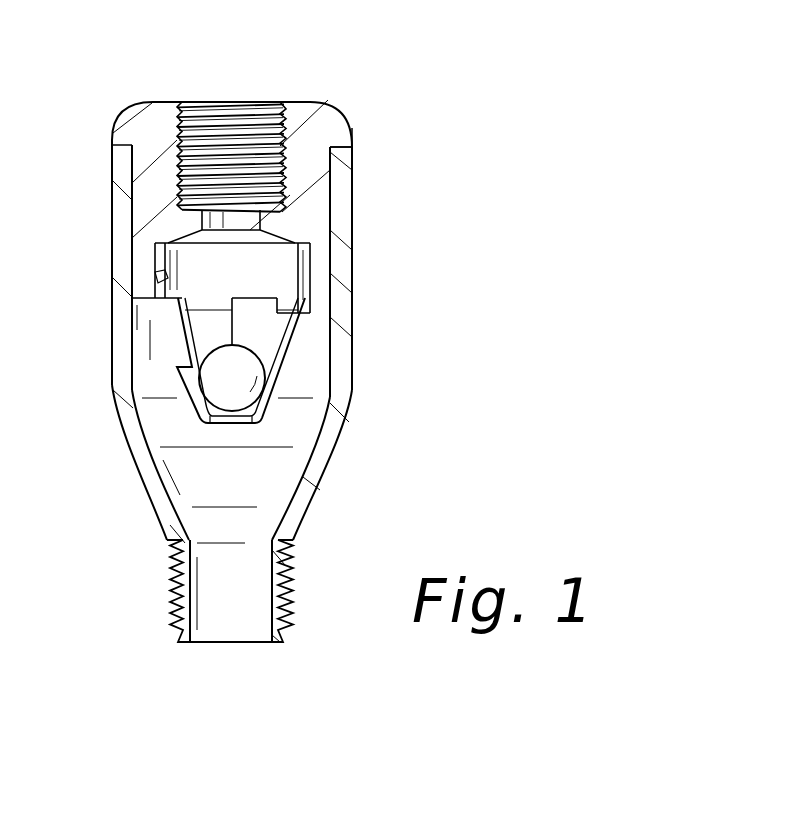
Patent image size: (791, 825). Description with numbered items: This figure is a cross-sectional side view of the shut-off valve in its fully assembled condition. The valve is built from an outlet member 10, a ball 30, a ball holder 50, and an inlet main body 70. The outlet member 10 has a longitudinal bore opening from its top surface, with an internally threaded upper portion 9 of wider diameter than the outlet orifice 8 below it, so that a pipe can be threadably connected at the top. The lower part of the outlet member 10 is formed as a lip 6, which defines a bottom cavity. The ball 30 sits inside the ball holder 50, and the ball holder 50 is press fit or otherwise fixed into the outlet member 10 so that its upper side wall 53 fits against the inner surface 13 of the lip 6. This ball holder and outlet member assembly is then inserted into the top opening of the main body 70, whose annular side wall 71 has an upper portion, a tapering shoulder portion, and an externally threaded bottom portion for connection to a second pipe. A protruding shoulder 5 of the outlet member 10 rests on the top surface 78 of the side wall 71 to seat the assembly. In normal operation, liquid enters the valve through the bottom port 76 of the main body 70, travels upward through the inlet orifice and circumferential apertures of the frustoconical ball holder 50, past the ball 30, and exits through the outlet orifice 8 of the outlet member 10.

The protruding shoulder 5 is at (113, 140).
The lip 6 is at (143, 262).
The internally threaded upper portion 9 is at (275, 103).
The outlet member 10 is at (337, 118).
The top surface 78 is at (350, 128).
The annular side wall 71 is at (345, 182).
The outlet orifice 8 is at (250, 226).
The upper side wall 53 is at (307, 280).
The inner surface 13 is at (167, 275).
The ball holder 50 is at (285, 330).
The ball 30 is at (265, 398).
The inlet main body 70 is at (327, 467).
The bottom port 76 is at (192, 615).